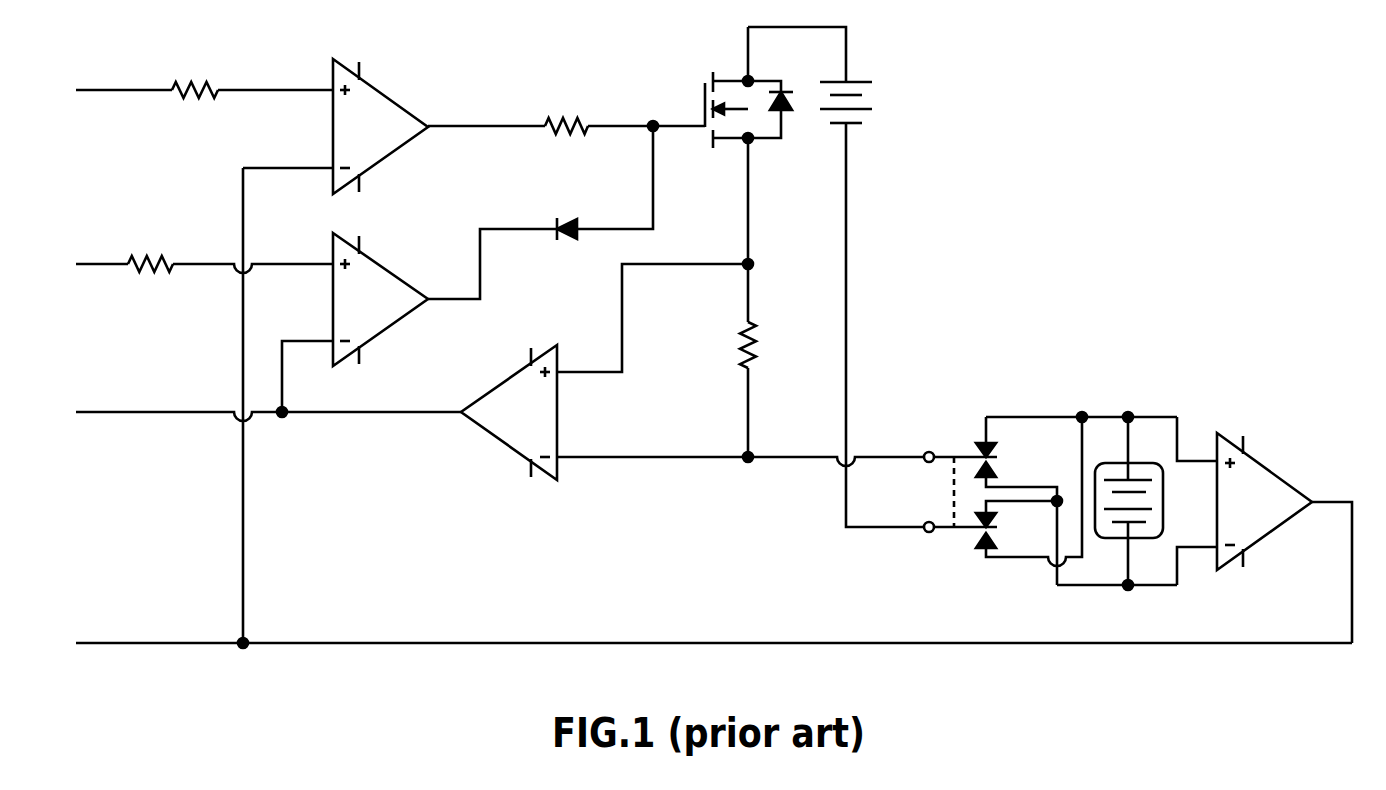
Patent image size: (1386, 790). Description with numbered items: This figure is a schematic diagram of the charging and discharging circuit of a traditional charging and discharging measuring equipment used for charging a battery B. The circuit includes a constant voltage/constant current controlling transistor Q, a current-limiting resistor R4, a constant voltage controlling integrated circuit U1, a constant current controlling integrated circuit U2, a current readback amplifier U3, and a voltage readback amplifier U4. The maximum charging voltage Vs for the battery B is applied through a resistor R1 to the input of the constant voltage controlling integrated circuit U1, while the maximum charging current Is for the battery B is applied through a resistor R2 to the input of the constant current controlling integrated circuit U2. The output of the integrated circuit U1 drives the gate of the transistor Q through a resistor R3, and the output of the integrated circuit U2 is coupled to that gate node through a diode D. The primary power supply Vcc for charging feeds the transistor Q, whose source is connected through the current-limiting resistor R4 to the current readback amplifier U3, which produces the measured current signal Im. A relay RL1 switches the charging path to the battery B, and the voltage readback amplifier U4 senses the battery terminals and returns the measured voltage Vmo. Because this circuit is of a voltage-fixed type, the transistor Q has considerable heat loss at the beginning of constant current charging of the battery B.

The maximum charging voltage Vs is at (124, 73).
The maximum charging current Is is at (102, 247).
The measured current input Im is at (268, 401).
The output voltage measurement node Vmo is at (714, 629).
The resistor R1 is at (252, 76).
The resistor R2 is at (230, 251).
The resistor R3 is at (566, 111).
The current-limiting resistor R4 is at (730, 392).
The constant voltage controlling integrated circuit U1 is at (335, 126).
The constant current controlling integrated circuit U2 is at (417, 323).
The current readback amplifier U3 is at (692, 372).
The voltage readback amplifier U4 is at (1264, 530).
The constant voltage/constant current controlling transistor Q is at (749, 174).
The diode D is at (605, 183).
The primary power supply Vcc is at (836, 277).
The relay RL1 is at (1050, 498).
The battery B is at (1123, 501).